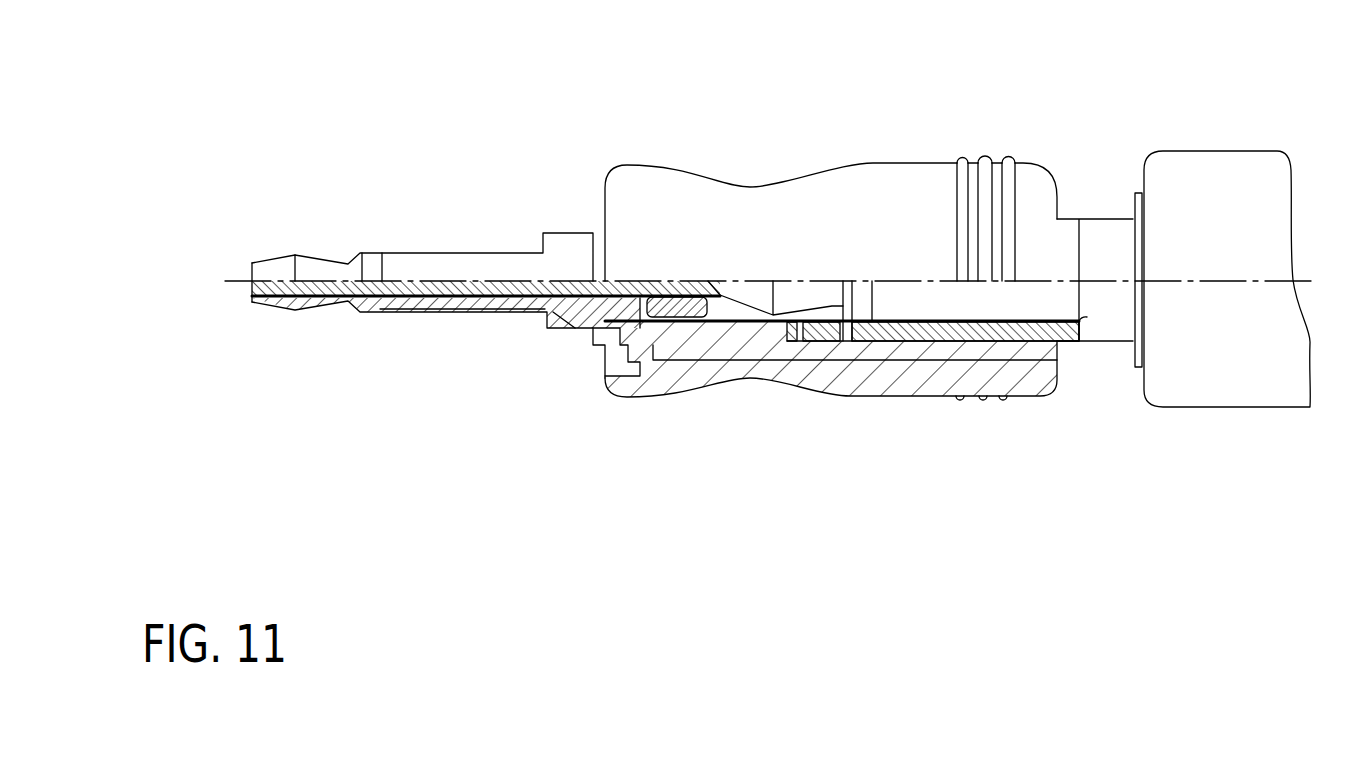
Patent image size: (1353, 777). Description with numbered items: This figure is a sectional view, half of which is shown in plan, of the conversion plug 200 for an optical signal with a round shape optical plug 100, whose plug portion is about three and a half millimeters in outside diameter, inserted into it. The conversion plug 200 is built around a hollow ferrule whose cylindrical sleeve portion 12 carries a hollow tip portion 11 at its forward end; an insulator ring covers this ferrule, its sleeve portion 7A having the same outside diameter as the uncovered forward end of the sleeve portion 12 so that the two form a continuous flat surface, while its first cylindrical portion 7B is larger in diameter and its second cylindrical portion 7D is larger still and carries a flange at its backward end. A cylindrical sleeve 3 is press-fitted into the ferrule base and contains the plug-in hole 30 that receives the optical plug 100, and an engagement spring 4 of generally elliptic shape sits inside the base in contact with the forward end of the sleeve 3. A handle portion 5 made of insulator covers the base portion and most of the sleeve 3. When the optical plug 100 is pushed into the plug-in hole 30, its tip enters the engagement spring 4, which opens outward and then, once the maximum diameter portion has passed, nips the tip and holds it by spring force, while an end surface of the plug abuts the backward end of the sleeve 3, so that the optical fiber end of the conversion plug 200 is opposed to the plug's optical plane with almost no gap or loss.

The conversion plug for an optical signal 200 is at (819, 168).
The round shape optical plug 100 is at (1227, 264).
The handle portion 5 is at (1213, 393).
The first cylindrical portion 7B is at (1107, 240).
The second cylindrical portion 7D is at (1135, 193).
The sleeve portion of the insulator ring 7A is at (992, 310).
The plug-in hole 30 is at (1083, 313).
The sleeve 3 is at (927, 333).
The sleeve portion 12 is at (857, 313).
The engagement spring 4 is at (793, 313).
The tip portion 11 is at (752, 302).